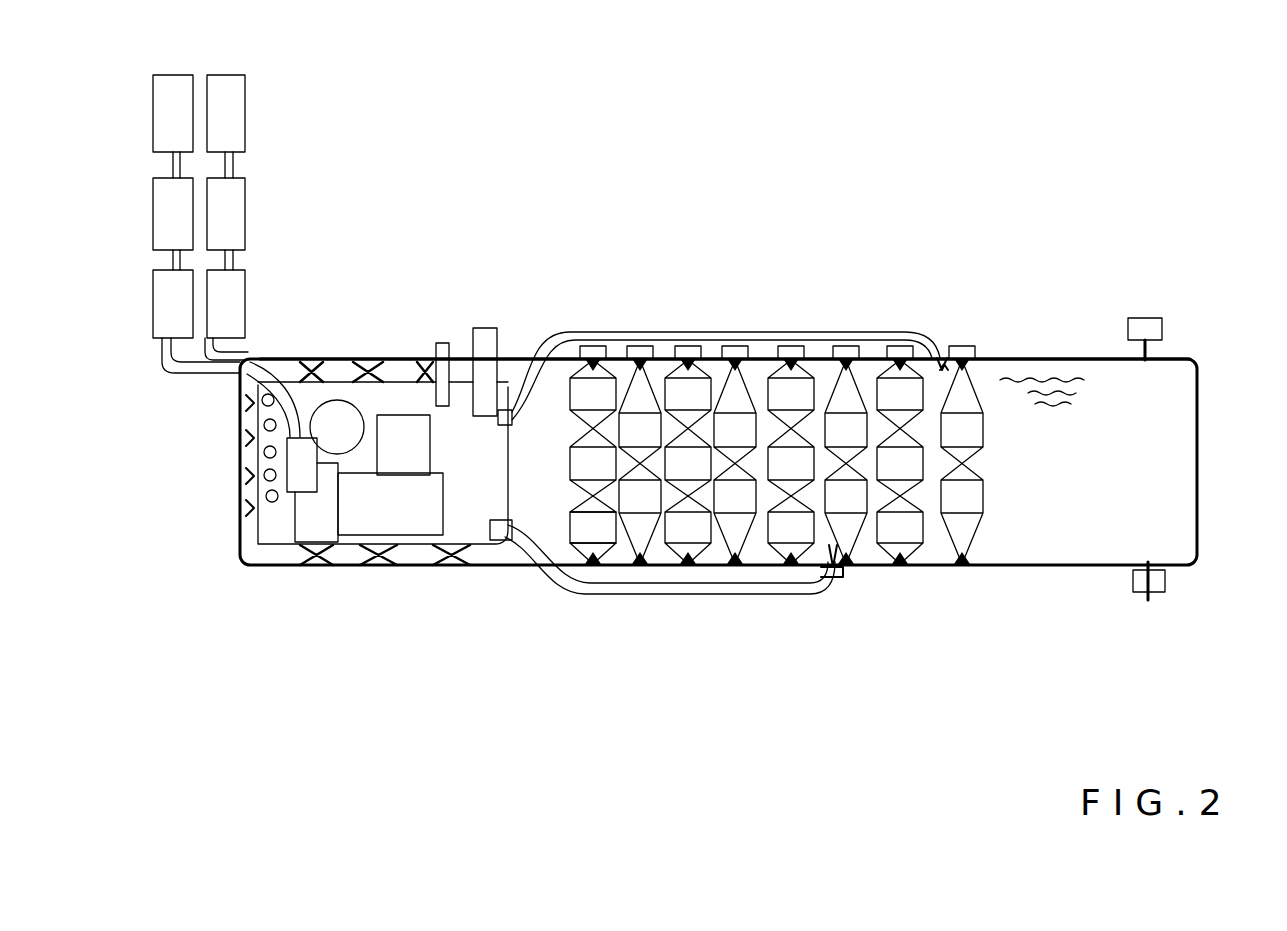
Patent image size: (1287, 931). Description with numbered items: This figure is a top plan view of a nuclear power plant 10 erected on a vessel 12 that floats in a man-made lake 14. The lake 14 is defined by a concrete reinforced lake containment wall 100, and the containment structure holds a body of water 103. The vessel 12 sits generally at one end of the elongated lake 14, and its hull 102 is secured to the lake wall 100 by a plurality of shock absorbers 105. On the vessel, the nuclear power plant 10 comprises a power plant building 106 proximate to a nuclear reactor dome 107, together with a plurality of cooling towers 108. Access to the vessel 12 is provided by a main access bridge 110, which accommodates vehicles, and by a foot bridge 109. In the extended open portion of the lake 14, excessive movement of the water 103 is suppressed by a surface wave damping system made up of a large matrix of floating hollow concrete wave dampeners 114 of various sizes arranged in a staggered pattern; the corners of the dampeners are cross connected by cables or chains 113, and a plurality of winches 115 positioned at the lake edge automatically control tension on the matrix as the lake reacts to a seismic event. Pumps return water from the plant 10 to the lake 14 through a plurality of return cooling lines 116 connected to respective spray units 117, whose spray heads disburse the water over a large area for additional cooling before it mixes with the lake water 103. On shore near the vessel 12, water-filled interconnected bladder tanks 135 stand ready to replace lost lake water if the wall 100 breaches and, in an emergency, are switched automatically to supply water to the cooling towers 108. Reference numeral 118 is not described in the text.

The nuclear power plant 10 is at (313, 532).
The vessel 12 is at (259, 532).
The lake 14 is at (1180, 524).
The lake containment wall 100 is at (340, 358).
The hull 102 is at (235, 570).
The body of water 103 is at (1000, 382).
The shock absorbers 105 is at (403, 360).
The power plant building 106 is at (400, 507).
The nuclear reactor dome 107 is at (337, 427).
The cooling towers 108 is at (258, 446).
The foot bridge 109 is at (441, 343).
The main access bridge 110 is at (483, 328).
The cables or chains 113 is at (605, 515).
The wave dampeners 114 is at (800, 385).
The winches 115 is at (642, 350).
The return cooling lines 116 is at (738, 335).
The spray units 117 is at (940, 345).
The port 118 is at (1128, 318).
The bladder tanks 135 is at (227, 213).